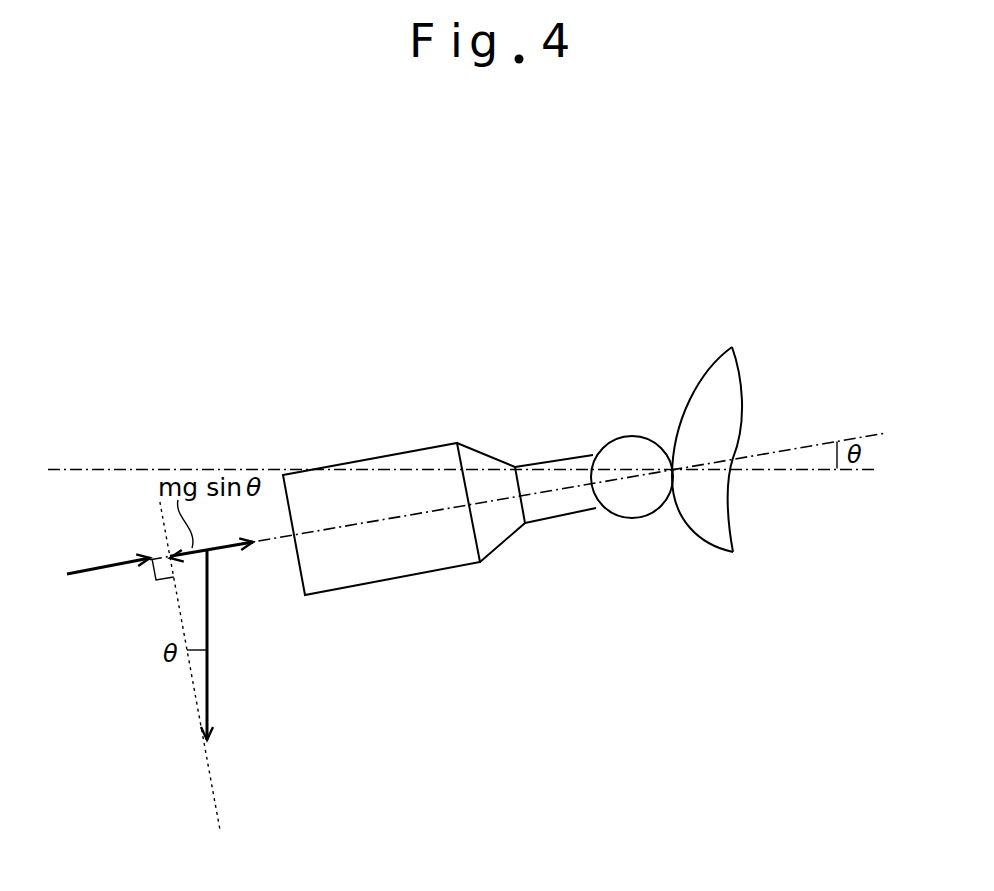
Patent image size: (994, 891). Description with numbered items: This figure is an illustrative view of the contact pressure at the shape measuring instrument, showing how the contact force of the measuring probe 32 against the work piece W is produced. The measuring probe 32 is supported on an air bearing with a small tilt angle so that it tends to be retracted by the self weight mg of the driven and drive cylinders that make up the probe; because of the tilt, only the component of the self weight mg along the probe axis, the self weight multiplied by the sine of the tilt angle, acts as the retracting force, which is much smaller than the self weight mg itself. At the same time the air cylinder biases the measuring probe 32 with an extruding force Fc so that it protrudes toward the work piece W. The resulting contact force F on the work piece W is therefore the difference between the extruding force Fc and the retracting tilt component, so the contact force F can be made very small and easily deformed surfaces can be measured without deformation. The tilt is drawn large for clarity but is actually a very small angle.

The measuring probe 32 is at (408, 450).
The work piece W is at (688, 393).
The extruding force Fc is at (108, 556).
The contact force F is at (220, 557).
The self weight mg is at (227, 645).